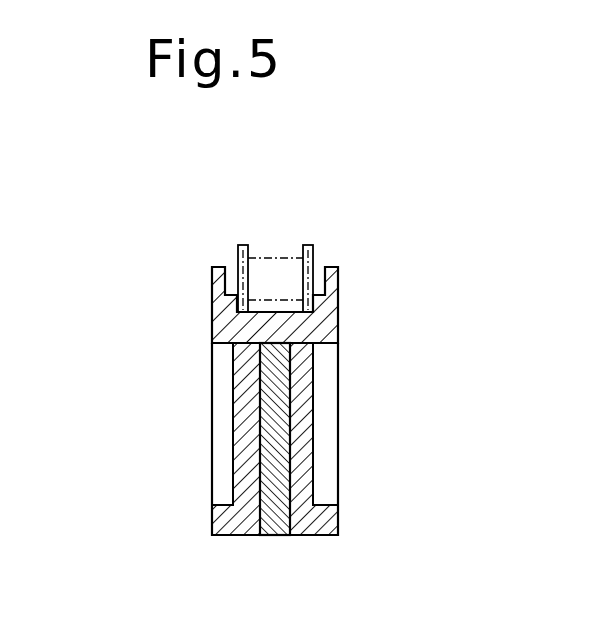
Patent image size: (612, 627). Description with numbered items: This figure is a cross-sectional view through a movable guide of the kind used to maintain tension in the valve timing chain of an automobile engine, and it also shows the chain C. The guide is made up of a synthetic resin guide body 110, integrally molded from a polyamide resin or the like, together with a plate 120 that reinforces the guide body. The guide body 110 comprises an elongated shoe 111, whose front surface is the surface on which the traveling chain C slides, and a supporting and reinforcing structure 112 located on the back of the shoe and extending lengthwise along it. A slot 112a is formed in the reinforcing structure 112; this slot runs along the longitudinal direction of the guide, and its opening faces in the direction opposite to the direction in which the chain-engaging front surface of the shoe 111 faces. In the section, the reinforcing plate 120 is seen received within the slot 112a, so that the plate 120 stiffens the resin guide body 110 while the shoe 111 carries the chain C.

The guide body 110 is at (363, 401).
The shoe 111 is at (318, 325).
The supporting and reinforcing structure 112 is at (307, 415).
The slot 112a is at (374, 472).
The plate 120 is at (272, 455).
The chain C is at (275, 257).